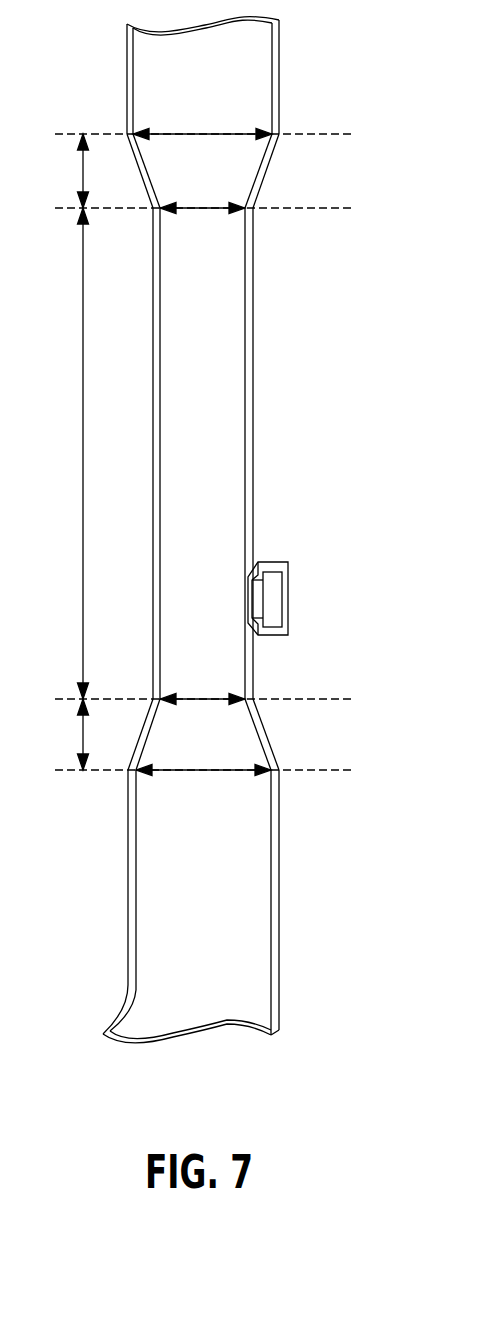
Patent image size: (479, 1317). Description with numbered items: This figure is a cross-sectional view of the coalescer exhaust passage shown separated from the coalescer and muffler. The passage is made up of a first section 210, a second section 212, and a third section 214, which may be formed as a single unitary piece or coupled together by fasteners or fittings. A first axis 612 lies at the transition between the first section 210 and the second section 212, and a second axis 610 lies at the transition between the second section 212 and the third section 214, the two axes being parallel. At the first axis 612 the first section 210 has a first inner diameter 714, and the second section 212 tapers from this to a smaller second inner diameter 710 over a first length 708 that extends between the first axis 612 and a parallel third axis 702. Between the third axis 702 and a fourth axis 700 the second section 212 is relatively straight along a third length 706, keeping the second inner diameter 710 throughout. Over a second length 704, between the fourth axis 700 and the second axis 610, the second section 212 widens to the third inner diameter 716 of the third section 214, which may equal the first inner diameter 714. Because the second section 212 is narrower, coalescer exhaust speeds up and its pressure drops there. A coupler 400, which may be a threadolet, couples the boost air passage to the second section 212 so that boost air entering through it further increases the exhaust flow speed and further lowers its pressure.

The first section 210 is at (128, 930).
The second section 212 is at (158, 418).
The third section 214 is at (136, 85).
The coupler 400 is at (274, 562).
The second axis 610 is at (340, 133).
The first axis 612 is at (340, 769).
The fourth axis 700 is at (340, 207).
The third axis 702 is at (340, 698).
The second length 704 is at (83, 170).
The third length 706 is at (83, 267).
The first length 708 is at (83, 733).
The second inner diameter 710 is at (202, 206).
The first inner diameter 714 is at (200, 768).
The third inner diameter 716 is at (238, 132).